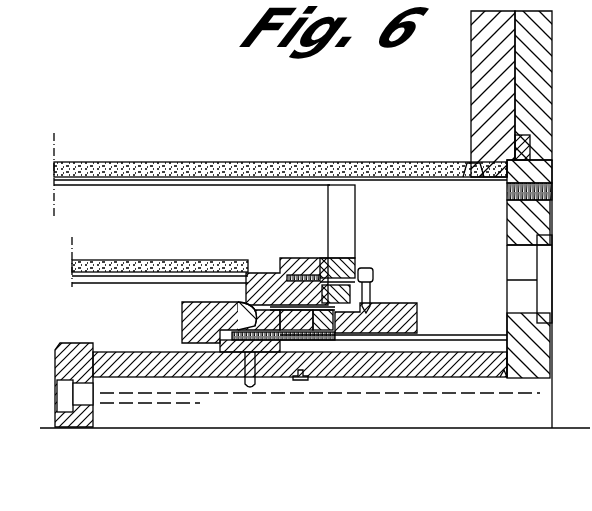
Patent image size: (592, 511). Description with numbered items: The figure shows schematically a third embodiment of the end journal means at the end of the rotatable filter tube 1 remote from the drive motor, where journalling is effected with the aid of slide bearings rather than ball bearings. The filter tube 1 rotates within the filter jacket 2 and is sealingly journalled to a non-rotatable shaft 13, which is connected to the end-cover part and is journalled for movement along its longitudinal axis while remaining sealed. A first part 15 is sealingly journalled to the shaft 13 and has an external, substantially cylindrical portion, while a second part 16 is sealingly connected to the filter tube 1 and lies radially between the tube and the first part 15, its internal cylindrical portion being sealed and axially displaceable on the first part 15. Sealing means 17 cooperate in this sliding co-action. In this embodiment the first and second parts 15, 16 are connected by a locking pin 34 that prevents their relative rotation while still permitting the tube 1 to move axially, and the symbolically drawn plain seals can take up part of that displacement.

The filter tube 1 is at (171, 262).
The filter jacket 2 is at (193, 170).
The non-rotatable shaft 13 is at (250, 410).
The first part 15 is at (400, 312).
The second part 16 is at (258, 270).
The sealing means 17 is at (240, 305).
The locking pin 34 is at (373, 292).